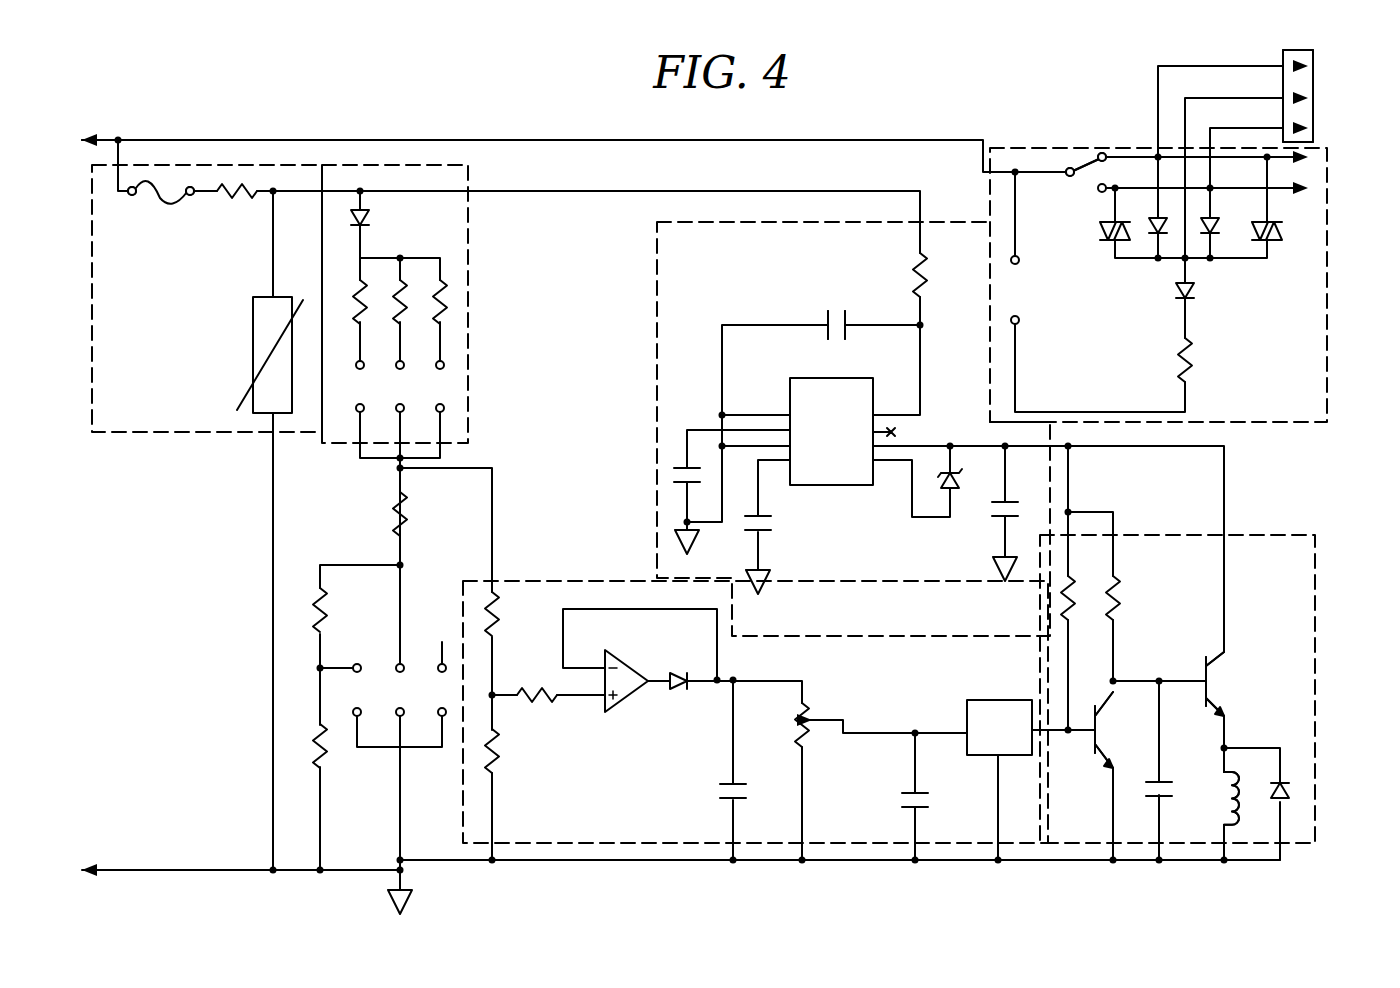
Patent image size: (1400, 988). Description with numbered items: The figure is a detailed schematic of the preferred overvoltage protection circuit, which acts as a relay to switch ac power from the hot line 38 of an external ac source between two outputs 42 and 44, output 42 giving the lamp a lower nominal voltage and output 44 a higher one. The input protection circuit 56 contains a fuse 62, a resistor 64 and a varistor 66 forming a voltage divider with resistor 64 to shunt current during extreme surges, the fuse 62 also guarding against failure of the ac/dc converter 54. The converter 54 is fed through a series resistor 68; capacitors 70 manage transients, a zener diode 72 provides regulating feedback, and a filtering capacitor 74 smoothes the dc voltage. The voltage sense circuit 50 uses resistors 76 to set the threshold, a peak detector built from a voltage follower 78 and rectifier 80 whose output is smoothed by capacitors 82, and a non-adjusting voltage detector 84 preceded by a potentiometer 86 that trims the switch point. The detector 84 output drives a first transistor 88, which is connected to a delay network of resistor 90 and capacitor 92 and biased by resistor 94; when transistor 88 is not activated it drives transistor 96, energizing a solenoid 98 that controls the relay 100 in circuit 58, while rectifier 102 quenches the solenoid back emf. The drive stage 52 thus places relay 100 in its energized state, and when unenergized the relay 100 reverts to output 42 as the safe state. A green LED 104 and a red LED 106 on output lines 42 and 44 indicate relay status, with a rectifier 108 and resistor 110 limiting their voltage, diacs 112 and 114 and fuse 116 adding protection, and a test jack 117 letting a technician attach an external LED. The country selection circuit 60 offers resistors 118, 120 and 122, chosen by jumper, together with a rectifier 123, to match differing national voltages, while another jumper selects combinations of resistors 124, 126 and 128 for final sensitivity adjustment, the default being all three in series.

The hot line 38 is at (110, 141).
The output 42 is at (1285, 162).
The output 44 is at (1285, 192).
The voltage sense circuit 50 is at (620, 841).
The relay drive circuit 52 is at (1315, 669).
The ac/dc converter 54 is at (657, 336).
The input protection circuit 56 is at (157, 432).
The circuit 58 is at (1042, 148).
The country selection circuit 60 is at (468, 260).
The fuse 62 is at (155, 198).
The resistor 64 is at (248, 196).
The varistor 66 is at (253, 299).
The series resistor 68 is at (922, 280).
The capacitors 70 is at (826, 318).
The zener diode 72 is at (954, 487).
The filtering capacitor 74 is at (1003, 525).
The resistors 76 is at (498, 598).
The voltage follower 78 is at (638, 656).
The rectifier 80 is at (678, 692).
The capacitors 82 is at (720, 800).
The voltage detector 84 is at (980, 700).
The potentiometer 86 is at (805, 720).
The first transistor 88 is at (1100, 748).
The resistor 90 is at (1115, 590).
The capacitor 92 is at (1162, 788).
The resistor 94 is at (1068, 596).
The transistor 96 is at (1208, 685).
The solenoid 98 is at (1237, 775).
The relay 100 is at (1087, 172).
The rectifier 102 is at (1286, 791).
The green LED 104 is at (1218, 240).
The red LED 106 is at (1150, 228).
The rectifier 108 is at (1192, 292).
The resistor 110 is at (1192, 362).
The diac 112 is at (1106, 240).
The diac 114 is at (1275, 238).
The fuse 116 is at (1017, 264).
The test jack 117 is at (1318, 84).
The resistor 118 is at (356, 303).
The resistor 120 is at (404, 294).
The resistor 122 is at (446, 300).
The rectifier 123 is at (364, 222).
The resistor 124 is at (392, 518).
The resistor 126 is at (312, 603).
The resistor 128 is at (312, 754).